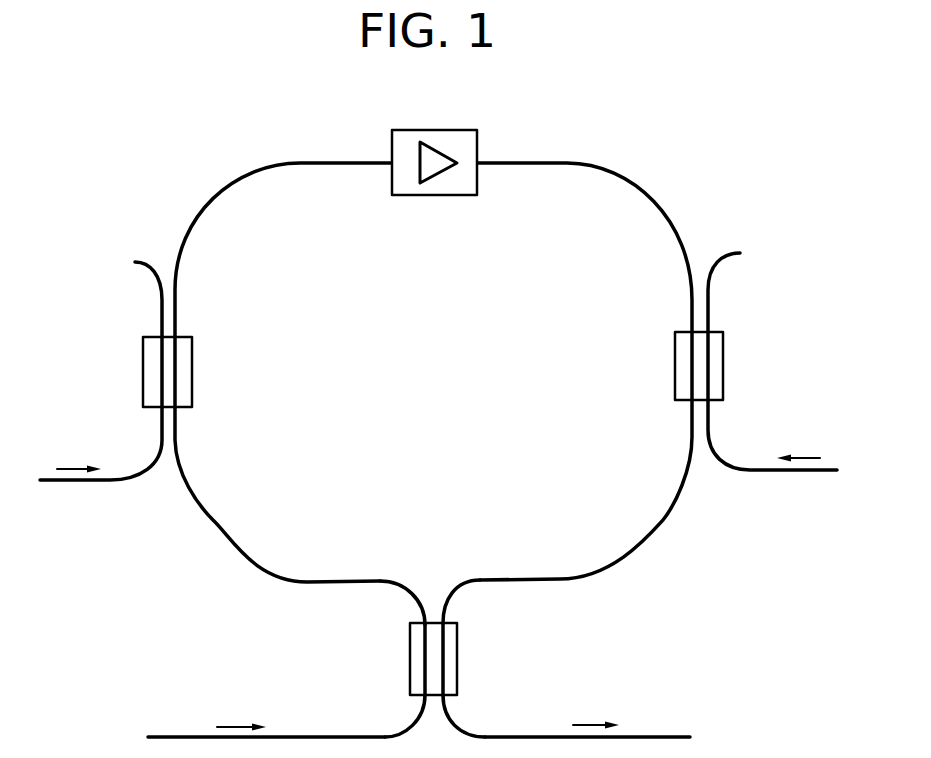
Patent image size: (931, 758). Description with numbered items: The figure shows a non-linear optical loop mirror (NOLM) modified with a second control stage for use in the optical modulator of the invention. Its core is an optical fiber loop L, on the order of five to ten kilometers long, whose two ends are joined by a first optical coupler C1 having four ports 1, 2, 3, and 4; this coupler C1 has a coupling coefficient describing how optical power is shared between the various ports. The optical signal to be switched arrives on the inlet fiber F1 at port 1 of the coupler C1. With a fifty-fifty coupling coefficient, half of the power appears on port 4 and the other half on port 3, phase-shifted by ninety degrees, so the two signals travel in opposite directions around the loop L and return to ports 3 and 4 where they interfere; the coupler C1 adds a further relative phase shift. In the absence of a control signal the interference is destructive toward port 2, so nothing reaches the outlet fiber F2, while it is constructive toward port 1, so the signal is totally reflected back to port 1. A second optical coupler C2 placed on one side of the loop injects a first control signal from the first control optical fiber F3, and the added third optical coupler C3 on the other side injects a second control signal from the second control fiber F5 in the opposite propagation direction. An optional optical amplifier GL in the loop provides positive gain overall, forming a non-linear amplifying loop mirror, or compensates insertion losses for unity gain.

The optical fiber loop L is at (657, 210).
The optical amplifier GL is at (433, 133).
The first optical coupler C1 is at (458, 670).
The second optical coupler C2 is at (145, 368).
The third optical coupler C3 is at (717, 353).
The inlet fiber F1 is at (184, 737).
The outlet fiber F2 is at (665, 737).
The first control optical fiber F3 is at (102, 483).
The second control fiber F5 is at (785, 473).
The port 1 is at (405, 716).
The port 2 is at (464, 716).
The port 3 is at (402, 603).
The port 4 is at (461, 602).